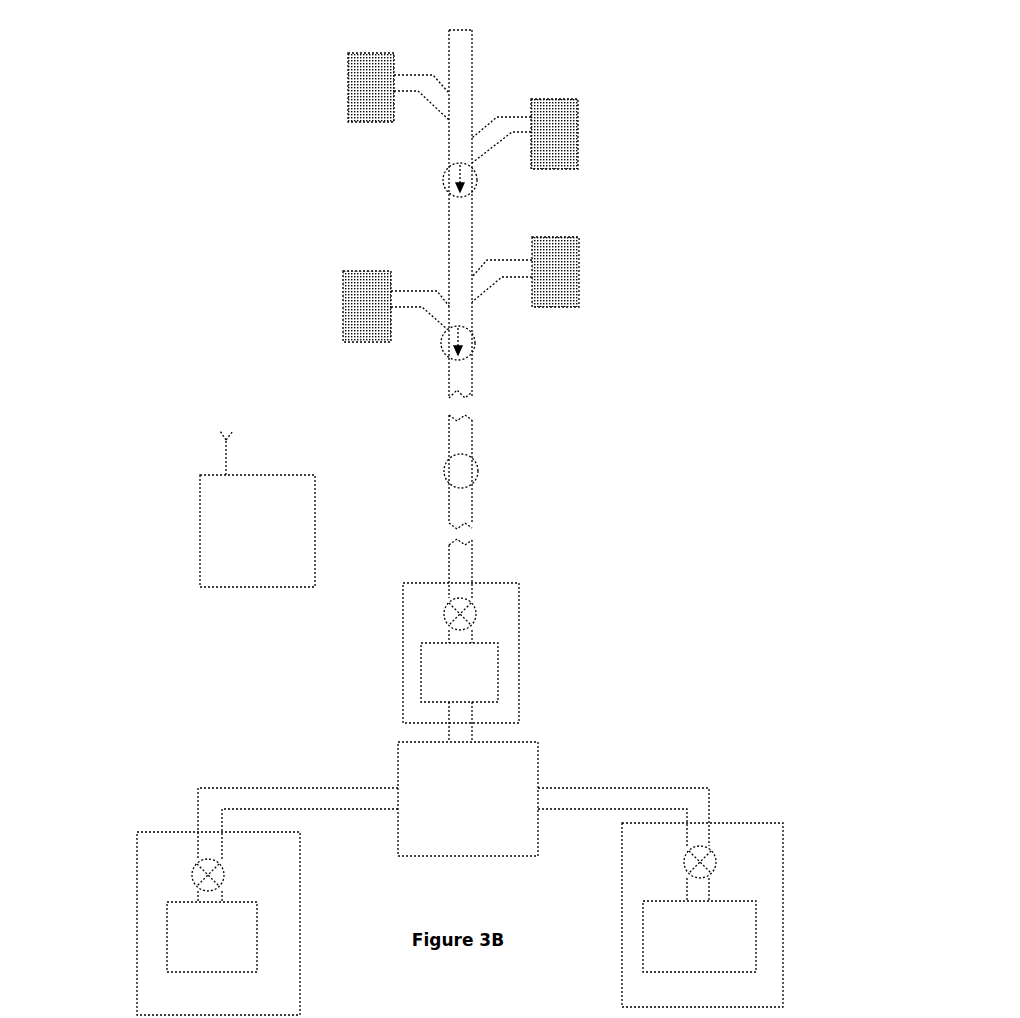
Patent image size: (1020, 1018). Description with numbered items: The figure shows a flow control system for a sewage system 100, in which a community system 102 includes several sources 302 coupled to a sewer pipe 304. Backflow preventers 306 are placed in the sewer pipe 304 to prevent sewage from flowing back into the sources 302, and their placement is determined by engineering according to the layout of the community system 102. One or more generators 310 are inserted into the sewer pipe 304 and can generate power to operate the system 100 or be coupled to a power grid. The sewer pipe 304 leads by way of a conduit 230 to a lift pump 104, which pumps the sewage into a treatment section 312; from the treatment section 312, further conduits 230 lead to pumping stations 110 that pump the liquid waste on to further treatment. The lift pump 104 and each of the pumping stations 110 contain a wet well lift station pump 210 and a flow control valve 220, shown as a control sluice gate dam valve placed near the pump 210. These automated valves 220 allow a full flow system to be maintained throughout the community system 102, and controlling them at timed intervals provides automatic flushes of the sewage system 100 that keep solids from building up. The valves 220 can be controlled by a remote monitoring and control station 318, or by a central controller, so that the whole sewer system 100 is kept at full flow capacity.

The sewage system 100 is at (219, 317).
The community system 102 is at (607, 210).
The lift pump 104 is at (520, 603).
The pumping stations 110 is at (137, 905).
The wet well lift station pump 210 is at (420, 675).
The flow control valve 220 is at (453, 607).
The conduit 230 is at (473, 572).
The sources 302 is at (346, 97).
The sewer pipe 304 is at (448, 246).
The backflow preventer 306 is at (447, 165).
The generator 310 is at (476, 466).
The treatment section 312 is at (538, 753).
The remote monitoring and control station 318 is at (200, 493).